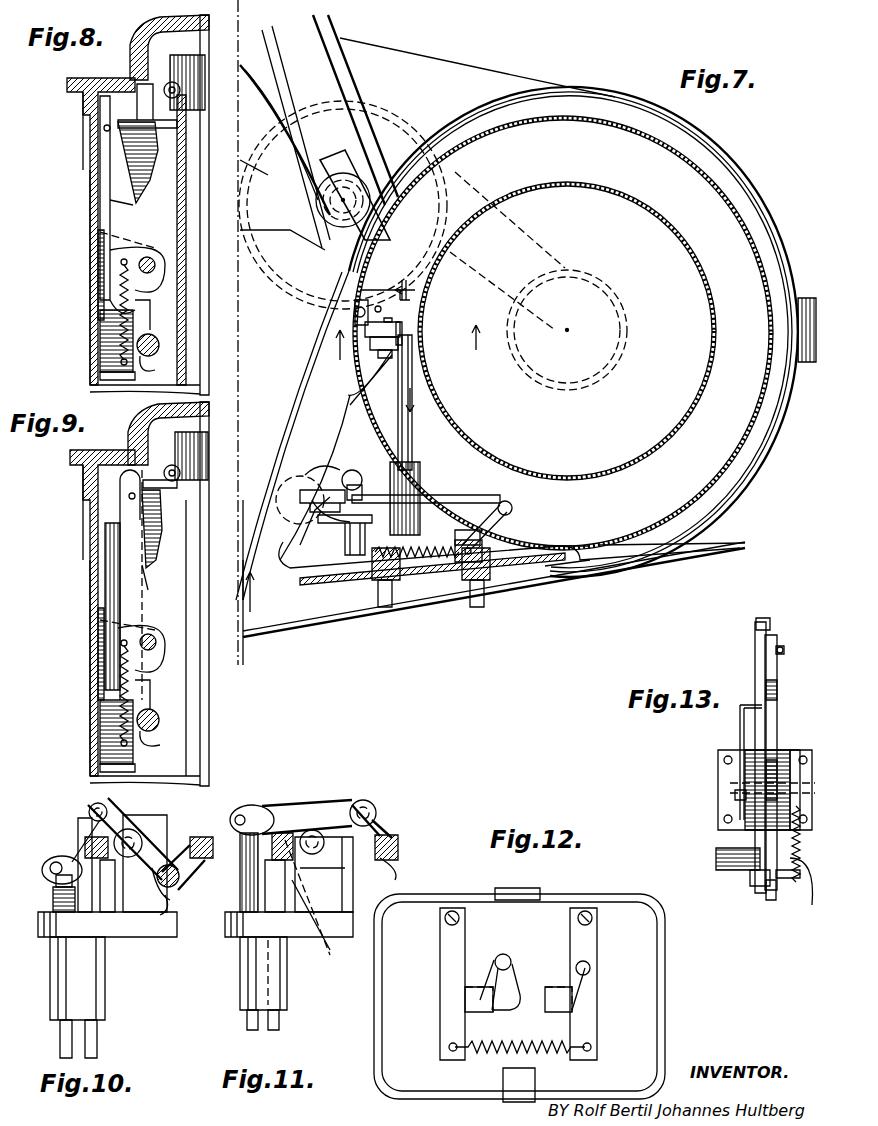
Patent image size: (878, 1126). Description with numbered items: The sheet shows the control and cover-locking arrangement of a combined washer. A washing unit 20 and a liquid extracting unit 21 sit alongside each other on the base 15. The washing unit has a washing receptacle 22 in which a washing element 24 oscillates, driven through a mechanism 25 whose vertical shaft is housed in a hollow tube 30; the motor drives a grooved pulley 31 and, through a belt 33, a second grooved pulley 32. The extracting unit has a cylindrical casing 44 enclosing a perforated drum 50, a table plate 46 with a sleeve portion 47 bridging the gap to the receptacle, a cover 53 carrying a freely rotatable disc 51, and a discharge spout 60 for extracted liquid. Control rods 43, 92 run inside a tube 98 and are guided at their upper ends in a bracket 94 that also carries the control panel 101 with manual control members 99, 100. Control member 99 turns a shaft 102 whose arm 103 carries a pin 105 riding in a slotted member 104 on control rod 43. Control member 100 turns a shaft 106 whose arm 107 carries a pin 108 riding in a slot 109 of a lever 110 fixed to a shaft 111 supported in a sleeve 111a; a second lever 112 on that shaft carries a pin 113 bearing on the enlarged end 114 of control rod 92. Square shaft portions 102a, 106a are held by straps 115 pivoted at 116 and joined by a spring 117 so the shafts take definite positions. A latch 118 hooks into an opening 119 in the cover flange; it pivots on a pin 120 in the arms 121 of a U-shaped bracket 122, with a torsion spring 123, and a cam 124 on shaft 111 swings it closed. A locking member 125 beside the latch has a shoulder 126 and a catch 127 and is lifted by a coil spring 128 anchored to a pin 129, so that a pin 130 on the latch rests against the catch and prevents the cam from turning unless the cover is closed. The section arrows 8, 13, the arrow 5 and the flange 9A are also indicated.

In FIG. 7, the direction arrow 5 is at (248, 588).
In FIG. 7, the section line 8 is at (412, 352).
In FIG. 7, the housing flange 9A is at (332, 440).
In FIG. 7, the section line 13 is at (411, 338).
In FIG. 7, the base 15 is at (686, 558).
In FIG. 7, the washing unit 20 is at (272, 632).
In FIG. 7, the liquid extracting unit 21 is at (790, 173).
In FIG. 7, the washing receptacle 22 is at (243, 596).
In FIG. 9, the washing receptacle 22 is at (200, 600).
In FIG. 7, the washing element 24 is at (292, 232).
In FIG. 7, the mechanism 25 is at (325, 100).
In FIG. 7, the hollow tube 30 is at (362, 180).
In FIG. 7, the grooved pulley 31 is at (532, 283).
In FIG. 7, the grooved pulley 32 is at (462, 190).
In FIG. 7, the belt 33 is at (440, 160).
In FIG. 7, the control rod 43 is at (312, 498).
In FIG. 10, the control rod 43 is at (60, 1044).
In FIG. 11, the control rod 43 is at (247, 1026).
In FIG. 7, the casing 44 is at (640, 552).
In FIG. 8, the casing 44 is at (90, 228).
In FIG. 9, the casing 44 is at (95, 685).
In FIG. 8, the table plate 46 is at (70, 82).
In FIG. 9, the table plate 46 is at (70, 458).
In FIG. 8, the sleeve portion 47 is at (85, 122).
In FIG. 9, the sleeve portion 47 is at (85, 500).
In FIG. 7, the perforated drum 50 is at (670, 430).
In FIG. 8, the perforated drum 50 is at (178, 196).
In FIG. 8, the disc 51 is at (182, 96).
In FIG. 9, the disc 51 is at (182, 472).
In FIG. 8, the cover 53 is at (138, 40).
In FIG. 9, the cover 53 is at (138, 431).
In FIG. 7, the discharge spout 60 is at (803, 318).
In FIG. 7, the control rod 92 is at (318, 465).
In FIG. 10, the control rod 92 is at (97, 1044).
In FIG. 11, the control rod 92 is at (279, 1026).
In FIG. 10, the bracket 94 is at (118, 930).
In FIG. 11, the bracket 94 is at (232, 935).
In FIG. 7, the tube 98 is at (296, 478).
In FIG. 10, the tube 98 is at (86, 972).
In FIG. 11, the tube 98 is at (240, 996).
In FIG. 7, the control member 99 is at (386, 610).
In FIG. 7, the control member 100 is at (478, 610).
In FIG. 7, the control panel 101 is at (562, 570).
In FIG. 12, the control panel 101 is at (665, 962).
In FIG. 7, the shaft 102 is at (340, 578).
In FIG. 7, the square shaft portion 102a is at (305, 566).
In FIG. 10, the square shaft portion 102a is at (85, 840).
In FIG. 12, the square shaft portion 102a is at (545, 1010).
In FIG. 7, the arm 103 is at (300, 535).
In FIG. 10, the arm 103 is at (85, 846).
In FIG. 11, the arm 103 is at (285, 833).
In FIG. 12, the arm 103 is at (566, 972).
In FIG. 7, the slotted member 104 is at (318, 518).
In FIG. 10, the slotted member 104 is at (56, 876).
In FIG. 11, the slotted member 104 is at (244, 806).
In FIG. 7, the pin 105 is at (300, 496).
In FIG. 10, the pin 105 is at (88, 880).
In FIG. 11, the pin 105 is at (262, 830).
In FIG. 12, the pin 105 is at (592, 966).
In FIG. 7, the shaft 106 is at (452, 565).
In FIG. 7, the square shaft portion 106a is at (484, 545).
In FIG. 10, the square shaft portion 106a is at (202, 836).
In FIG. 11, the square shaft portion 106a is at (398, 850).
In FIG. 12, the square shaft portion 106a is at (465, 1010).
In FIG. 7, the arm 107 is at (480, 536).
In FIG. 10, the arm 107 is at (190, 860).
In FIG. 11, the arm 107 is at (384, 826).
In FIG. 12, the arm 107 is at (478, 960).
In FIG. 7, the pin 108 is at (500, 510).
In FIG. 10, the pin 108 is at (172, 898).
In FIG. 11, the pin 108 is at (372, 800).
In FIG. 12, the pin 108 is at (512, 958).
In FIG. 10, the slot 109 is at (166, 920).
In FIG. 11, the slot 109 is at (358, 800).
In FIG. 7, the lever 110 is at (480, 530).
In FIG. 10, the lever 110 is at (180, 886).
In FIG. 11, the lever 110 is at (398, 870).
In FIG. 7, the shaft 111 is at (412, 420).
In FIG. 8, the shaft 111 is at (152, 336).
In FIG. 9, the shaft 111 is at (160, 720).
In FIG. 10, the shaft 111 is at (112, 912).
In FIG. 11, the shaft 111 is at (340, 800).
In FIG. 13, the shaft 111 is at (716, 858).
In FIG. 7, the sleeve 111a is at (412, 455).
In FIG. 7, the lever 112 is at (468, 496).
In FIG. 10, the lever 112 is at (110, 812).
In FIG. 11, the lever 112 is at (345, 870).
In FIG. 7, the pin 113 is at (352, 472).
In FIG. 10, the pin 113 is at (106, 806).
In FIG. 11, the pin 113 is at (332, 940).
In FIG. 10, the enlarged end 114 is at (80, 812).
In FIG. 11, the enlarged end 114 is at (298, 950).
In FIG. 7, the straps 115 is at (505, 570).
In FIG. 12, the straps 115 is at (597, 1002).
In FIG. 12, the pivot 116 is at (593, 918).
In FIG. 7, the spring 117 is at (414, 560).
In FIG. 12, the spring 117 is at (492, 1052).
In FIG. 7, the latch 118 is at (408, 340).
In FIG. 8, the latch 118 is at (110, 178).
In FIG. 9, the latch 118 is at (120, 545).
In FIG. 13, the latch 118 is at (755, 650).
In FIG. 8, the opening 119 is at (187, 72).
In FIG. 9, the opening 119 is at (190, 453).
In FIG. 7, the pin 120 is at (380, 312).
In FIG. 8, the pin 120 is at (150, 258).
In FIG. 9, the pin 120 is at (150, 634).
In FIG. 13, the pin 120 is at (735, 796).
In FIG. 7, the arms 121 is at (412, 350).
In FIG. 8, the arms 121 is at (158, 270).
In FIG. 9, the arms 121 is at (156, 660).
In FIG. 13, the arms 121 is at (786, 750).
In FIG. 7, the bracket 122 is at (375, 290).
In FIG. 8, the bracket 122 is at (100, 266).
In FIG. 9, the bracket 122 is at (100, 644).
In FIG. 13, the bracket 122 is at (718, 778).
In FIG. 7, the torsion spring 123 is at (378, 380).
In FIG. 8, the torsion spring 123 is at (130, 190).
In FIG. 9, the torsion spring 123 is at (146, 560).
In FIG. 13, the torsion spring 123 is at (740, 735).
In FIG. 8, the cam 124 is at (160, 372).
In FIG. 9, the cam 124 is at (162, 738).
In FIG. 13, the cam 124 is at (750, 880).
In FIG. 7, the locking member 125 is at (405, 333).
In FIG. 8, the locking member 125 is at (100, 330).
In FIG. 9, the locking member 125 is at (100, 750).
In FIG. 13, the locking member 125 is at (768, 895).
In FIG. 8, the shoulder 126 is at (150, 128).
In FIG. 9, the shoulder 126 is at (160, 518).
In FIG. 8, the catch 127 is at (128, 122).
In FIG. 9, the catch 127 is at (142, 500).
In FIG. 13, the catch 127 is at (770, 636).
In FIG. 8, the coil spring 128 is at (118, 350).
In FIG. 9, the coil spring 128 is at (118, 722).
In FIG. 13, the coil spring 128 is at (797, 884).
In FIG. 8, the pin 129 is at (100, 374).
In FIG. 9, the pin 129 is at (136, 766).
In FIG. 13, the pin 129 is at (786, 880).
In FIG. 7, the pin 130 is at (355, 313).
In FIG. 8, the pin 130 is at (104, 130).
In FIG. 9, the pin 130 is at (128, 496).
In FIG. 13, the pin 130 is at (782, 647).